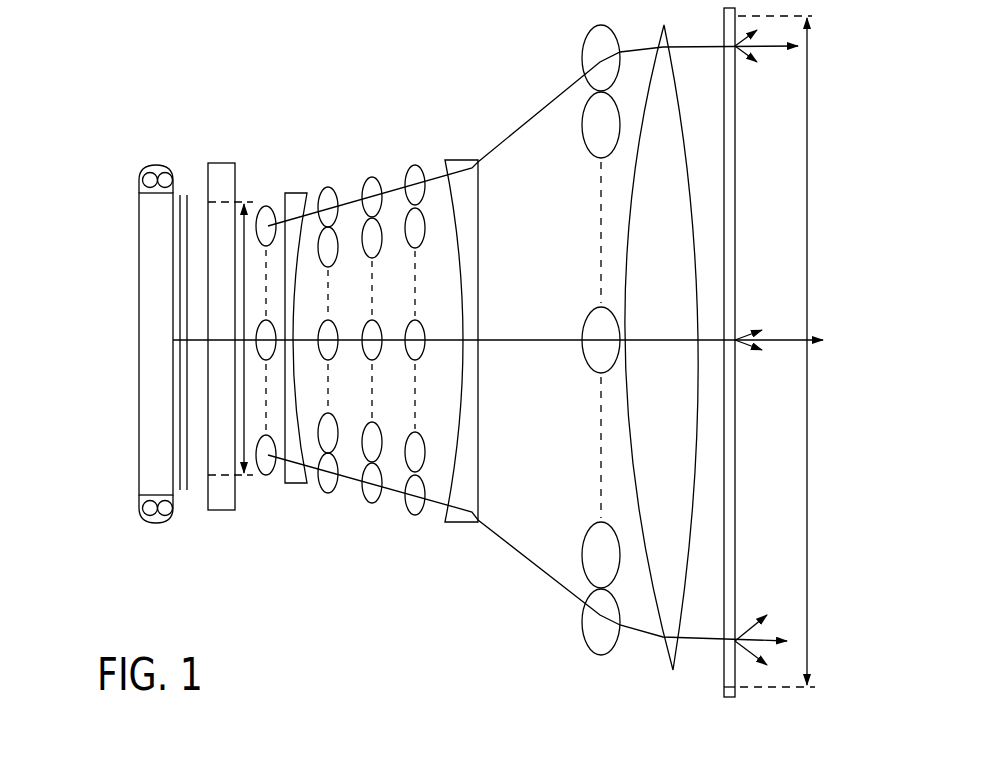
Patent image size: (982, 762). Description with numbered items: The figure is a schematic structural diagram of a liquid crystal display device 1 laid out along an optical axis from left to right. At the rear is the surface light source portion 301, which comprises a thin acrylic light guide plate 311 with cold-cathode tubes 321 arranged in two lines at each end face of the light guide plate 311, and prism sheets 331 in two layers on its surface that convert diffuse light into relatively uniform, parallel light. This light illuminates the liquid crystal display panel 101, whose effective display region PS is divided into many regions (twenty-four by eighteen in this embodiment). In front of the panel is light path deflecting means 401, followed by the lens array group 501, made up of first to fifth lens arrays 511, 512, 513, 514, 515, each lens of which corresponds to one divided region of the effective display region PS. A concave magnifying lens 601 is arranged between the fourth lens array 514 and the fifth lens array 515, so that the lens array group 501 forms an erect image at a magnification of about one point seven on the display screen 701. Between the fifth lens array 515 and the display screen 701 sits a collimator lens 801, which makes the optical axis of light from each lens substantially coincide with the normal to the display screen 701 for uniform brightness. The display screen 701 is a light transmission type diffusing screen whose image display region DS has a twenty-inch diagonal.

The liquid crystal display device 1 is at (345, 608).
The liquid crystal display panel 101 is at (230, 160).
The surface light source portion 301 is at (130, 322).
The light guide plate 311 is at (140, 463).
The cold-cathode tubes 321 is at (168, 172).
The prism sheets 331 is at (185, 490).
The light path deflecting means 401 is at (295, 483).
The lens array group 501 is at (427, 82).
The first lens array 511 is at (270, 208).
The second lens array 512 is at (330, 194).
The third lens array 513 is at (378, 176).
The fourth lens array 514 is at (415, 164).
The fifth lens array 515 is at (595, 52).
The magnifying lens 601 is at (462, 522).
The display screen 701 is at (740, 697).
The collimator lens 801 is at (668, 658).
The effective display region PS is at (253, 478).
The image display region DS is at (807, 608).